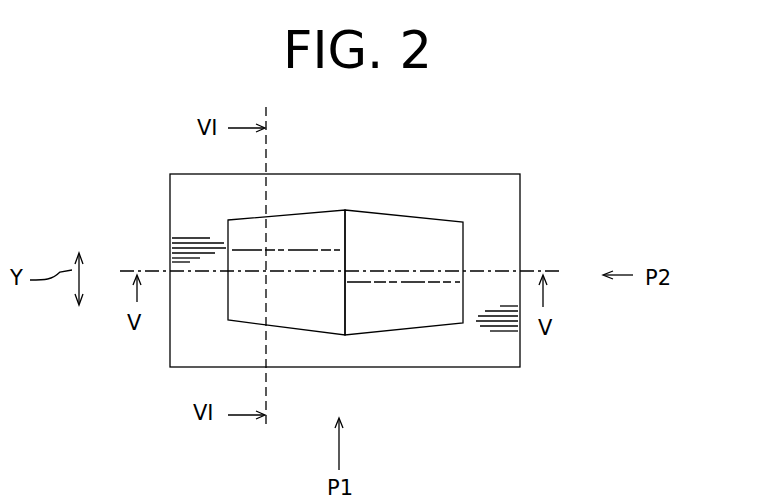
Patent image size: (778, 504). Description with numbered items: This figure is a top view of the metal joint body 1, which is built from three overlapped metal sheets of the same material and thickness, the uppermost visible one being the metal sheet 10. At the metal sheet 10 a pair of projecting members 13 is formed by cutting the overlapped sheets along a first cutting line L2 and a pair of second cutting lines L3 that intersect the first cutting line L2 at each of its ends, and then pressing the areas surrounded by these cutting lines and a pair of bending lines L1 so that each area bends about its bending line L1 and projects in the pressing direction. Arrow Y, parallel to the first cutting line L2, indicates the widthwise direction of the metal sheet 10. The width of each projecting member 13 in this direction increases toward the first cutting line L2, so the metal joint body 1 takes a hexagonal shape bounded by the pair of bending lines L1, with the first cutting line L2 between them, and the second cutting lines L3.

The metal joint body 1 is at (561, 177).
The metal sheet 10 is at (475, 192).
The projecting member 13 is at (319, 312).
The bending line L1 is at (223, 245).
The first cutting line L2 is at (345, 262).
The second cutting line L3 is at (297, 210).